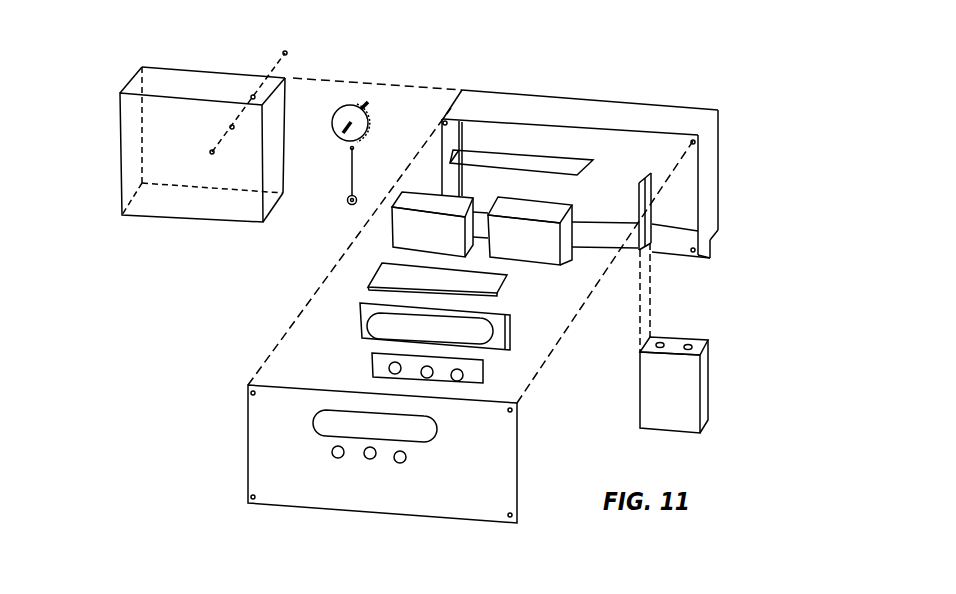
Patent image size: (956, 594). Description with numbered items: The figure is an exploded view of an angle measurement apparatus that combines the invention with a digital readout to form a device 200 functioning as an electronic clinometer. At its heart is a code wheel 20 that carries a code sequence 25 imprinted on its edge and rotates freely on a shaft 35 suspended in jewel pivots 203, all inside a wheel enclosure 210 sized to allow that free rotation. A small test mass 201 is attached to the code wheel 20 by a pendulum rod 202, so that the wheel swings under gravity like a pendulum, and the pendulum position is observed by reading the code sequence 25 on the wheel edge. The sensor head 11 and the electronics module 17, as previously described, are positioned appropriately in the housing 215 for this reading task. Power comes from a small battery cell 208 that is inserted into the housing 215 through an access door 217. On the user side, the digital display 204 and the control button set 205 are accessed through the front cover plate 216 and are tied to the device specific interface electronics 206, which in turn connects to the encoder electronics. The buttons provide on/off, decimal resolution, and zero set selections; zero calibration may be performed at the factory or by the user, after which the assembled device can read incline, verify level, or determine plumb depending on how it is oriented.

The device 200 is at (190, 320).
The wheel enclosure 210 is at (152, 80).
The jewel pivots 203 is at (208, 154).
The code wheel 20 is at (342, 116).
The code sequence 25 is at (369, 126).
The shaft 35 is at (338, 130).
The pendulum rod 202 is at (348, 167).
The test mass 201 is at (343, 205).
The housing 215 is at (657, 110).
The access door 217 is at (713, 257).
The sensor head 11 is at (389, 240).
The electronics module 17 is at (567, 250).
The device specific interface electronics 206 is at (503, 285).
The digital display 204 is at (362, 322).
The control button set 205 is at (483, 377).
The front cover plate 216 is at (243, 417).
The battery cell 208 is at (705, 408).